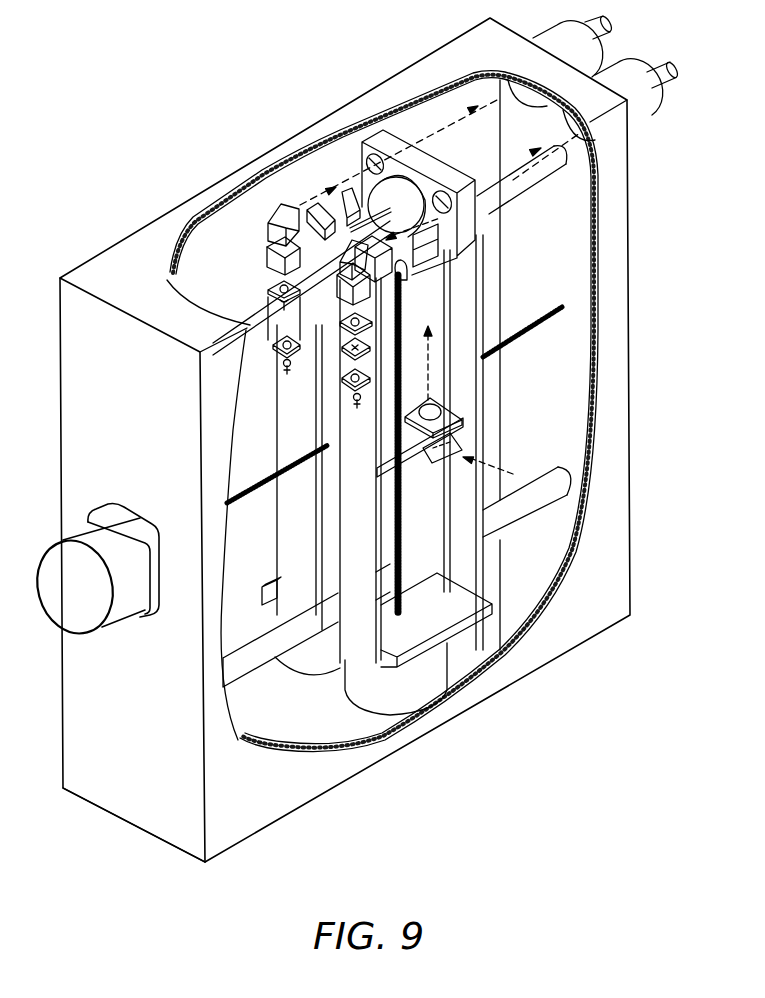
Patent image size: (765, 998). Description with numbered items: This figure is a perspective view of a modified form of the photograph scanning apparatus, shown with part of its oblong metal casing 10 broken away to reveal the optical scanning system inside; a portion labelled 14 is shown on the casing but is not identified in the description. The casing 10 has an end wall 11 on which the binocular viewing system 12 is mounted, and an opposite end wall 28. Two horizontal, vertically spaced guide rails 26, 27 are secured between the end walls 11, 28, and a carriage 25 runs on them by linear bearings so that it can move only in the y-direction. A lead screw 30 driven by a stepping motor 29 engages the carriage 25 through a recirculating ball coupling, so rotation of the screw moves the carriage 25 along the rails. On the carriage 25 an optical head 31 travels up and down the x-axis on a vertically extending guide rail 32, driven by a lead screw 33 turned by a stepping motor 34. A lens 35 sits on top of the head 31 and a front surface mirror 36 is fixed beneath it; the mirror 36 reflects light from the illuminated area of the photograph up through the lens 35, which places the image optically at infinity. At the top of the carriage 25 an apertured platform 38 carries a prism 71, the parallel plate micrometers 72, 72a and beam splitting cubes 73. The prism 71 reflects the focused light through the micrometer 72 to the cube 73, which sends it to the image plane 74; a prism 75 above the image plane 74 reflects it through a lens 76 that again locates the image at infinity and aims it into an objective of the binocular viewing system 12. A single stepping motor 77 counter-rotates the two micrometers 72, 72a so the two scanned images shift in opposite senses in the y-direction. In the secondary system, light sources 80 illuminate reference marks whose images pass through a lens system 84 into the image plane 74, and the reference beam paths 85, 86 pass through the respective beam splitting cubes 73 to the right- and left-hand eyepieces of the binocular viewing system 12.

The casing 10 is at (148, 240).
The end wall 11 is at (566, 259).
The binocular viewing system 12 is at (623, 76).
The front wall 14 is at (322, 778).
The carriage 25 is at (302, 530).
The guide rail 26 is at (538, 175).
The guide rail 27 is at (532, 487).
The end wall 28 is at (140, 813).
The stepping motor 29 is at (72, 604).
The lead screw 30 is at (533, 330).
The optical head 31 is at (395, 448).
The vertically extending guide rail 32 is at (452, 530).
The lead screw 33 is at (398, 568).
The stepping motor 34 is at (367, 672).
The lens 35 is at (447, 407).
The front surface mirror 36 is at (427, 455).
The apertured platform 38 is at (410, 266).
The prism 71 is at (458, 233).
The parallel plate micrometer 72 is at (385, 305).
The parallel plate micrometer 72a is at (307, 203).
The beam splitting cube 73 is at (273, 250).
The image plane 74 is at (258, 226).
The prism 75 is at (283, 220).
The lens 76 is at (357, 153).
The stepping motor 77 is at (397, 178).
The light source 80 is at (345, 408).
The lens system 84 is at (277, 293).
The reference image light beam path 85 is at (280, 276).
The reference image light beam path 86 is at (352, 400).